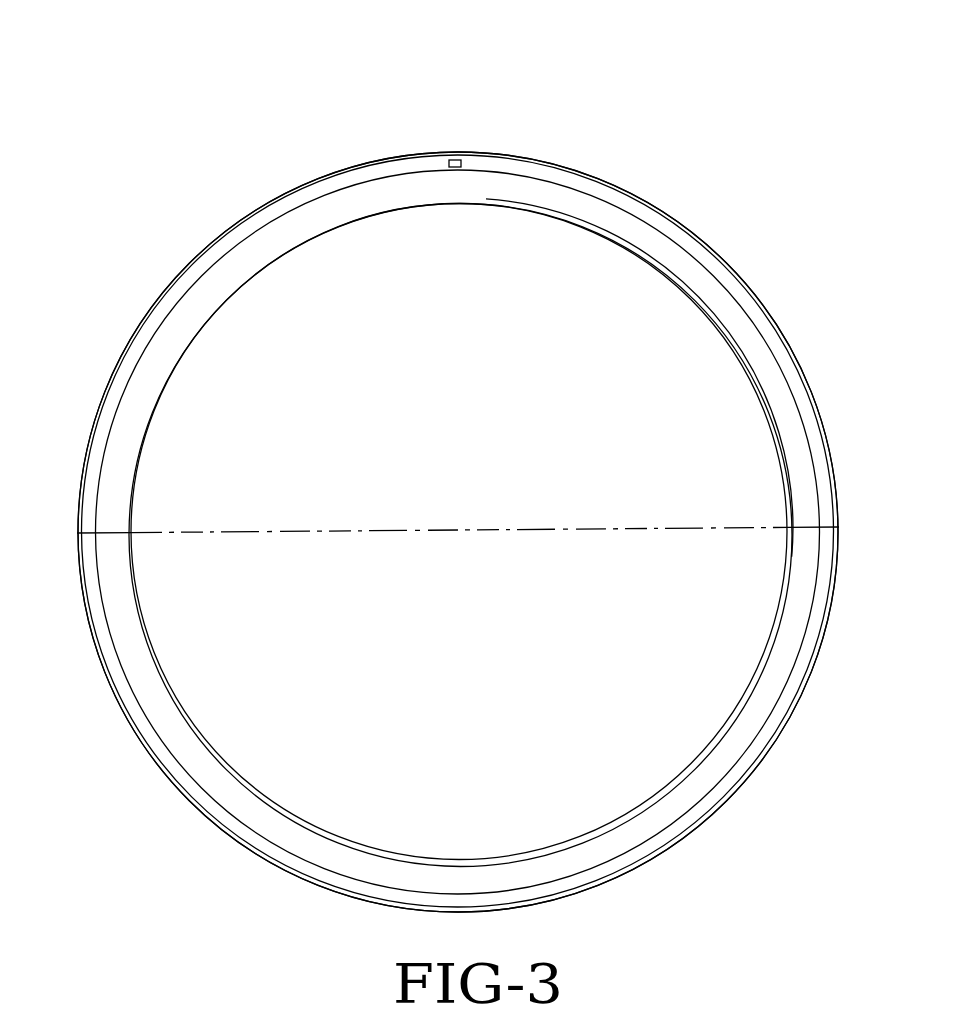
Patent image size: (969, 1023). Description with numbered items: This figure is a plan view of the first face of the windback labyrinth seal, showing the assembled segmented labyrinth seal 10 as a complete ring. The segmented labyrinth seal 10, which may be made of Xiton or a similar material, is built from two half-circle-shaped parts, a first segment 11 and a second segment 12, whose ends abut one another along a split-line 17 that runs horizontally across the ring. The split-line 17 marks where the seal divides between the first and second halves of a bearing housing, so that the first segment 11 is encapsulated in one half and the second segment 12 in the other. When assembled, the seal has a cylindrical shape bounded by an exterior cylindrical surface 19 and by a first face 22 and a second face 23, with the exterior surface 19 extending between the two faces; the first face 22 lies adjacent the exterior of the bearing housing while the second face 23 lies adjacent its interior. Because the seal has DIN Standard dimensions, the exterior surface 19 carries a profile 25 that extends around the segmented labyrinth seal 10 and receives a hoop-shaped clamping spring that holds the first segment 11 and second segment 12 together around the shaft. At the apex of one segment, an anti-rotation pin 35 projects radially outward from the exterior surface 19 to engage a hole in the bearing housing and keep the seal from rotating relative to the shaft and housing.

The segmented labyrinth seal 10 is at (210, 108).
The first segment 11 is at (207, 835).
The second segment 12 is at (339, 153).
The split-line 17 is at (685, 527).
The exterior cylindrical surface 19 is at (722, 280).
The first face 22 is at (155, 700).
The second face 23 is at (225, 278).
The profile 25 is at (590, 175).
The anti-rotation pin 35 is at (452, 160).